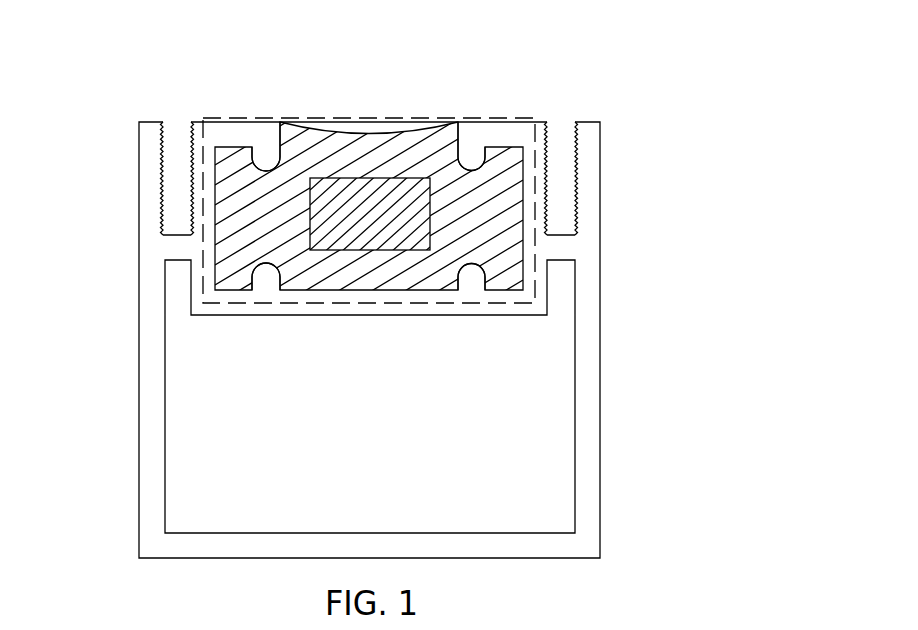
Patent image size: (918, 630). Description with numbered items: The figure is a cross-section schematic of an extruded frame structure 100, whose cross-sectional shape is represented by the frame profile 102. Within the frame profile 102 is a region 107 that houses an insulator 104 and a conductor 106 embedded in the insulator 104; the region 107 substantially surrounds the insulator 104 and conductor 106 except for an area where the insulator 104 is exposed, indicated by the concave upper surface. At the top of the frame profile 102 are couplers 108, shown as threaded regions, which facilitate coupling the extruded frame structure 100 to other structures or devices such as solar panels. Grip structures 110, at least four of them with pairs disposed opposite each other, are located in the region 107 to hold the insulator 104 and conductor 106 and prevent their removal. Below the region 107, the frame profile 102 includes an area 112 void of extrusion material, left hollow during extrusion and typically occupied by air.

The extruded frame structure 100 is at (687, 135).
The frame profile 102 is at (157, 368).
The insulator 104 is at (338, 132).
The conductor 106 is at (398, 193).
The region 107 is at (535, 303).
The couplers 108 is at (175, 180).
The grip structures 110 is at (472, 158).
The area void of extrusion material 112 is at (398, 418).